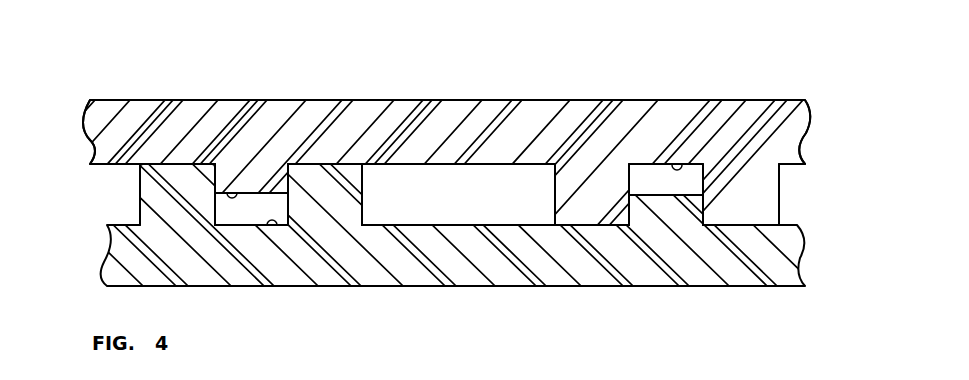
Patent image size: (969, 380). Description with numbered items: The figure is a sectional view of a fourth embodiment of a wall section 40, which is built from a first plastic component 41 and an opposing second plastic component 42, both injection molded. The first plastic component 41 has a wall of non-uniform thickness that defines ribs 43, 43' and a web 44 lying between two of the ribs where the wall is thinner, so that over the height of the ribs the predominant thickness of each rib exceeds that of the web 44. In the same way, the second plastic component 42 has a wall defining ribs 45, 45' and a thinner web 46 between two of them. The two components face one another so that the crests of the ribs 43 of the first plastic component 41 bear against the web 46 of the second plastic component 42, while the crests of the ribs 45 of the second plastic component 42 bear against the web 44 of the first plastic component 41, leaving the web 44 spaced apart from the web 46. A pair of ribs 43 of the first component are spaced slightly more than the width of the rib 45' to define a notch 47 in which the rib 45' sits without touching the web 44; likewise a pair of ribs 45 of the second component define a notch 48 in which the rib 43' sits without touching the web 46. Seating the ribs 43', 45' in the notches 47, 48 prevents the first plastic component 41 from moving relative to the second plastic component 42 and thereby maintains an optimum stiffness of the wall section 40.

The wall section 40 is at (88, 97).
The first plastic component 41 is at (806, 133).
The second plastic component 42 is at (803, 249).
The ribs 43 is at (458, 194).
The rib 43' is at (251, 260).
The web 44 is at (448, 165).
The ribs 45 is at (234, 194).
The rib 45' is at (665, 141).
The web 46 is at (398, 225).
The notch 47 is at (681, 168).
The notch 48 is at (277, 223).